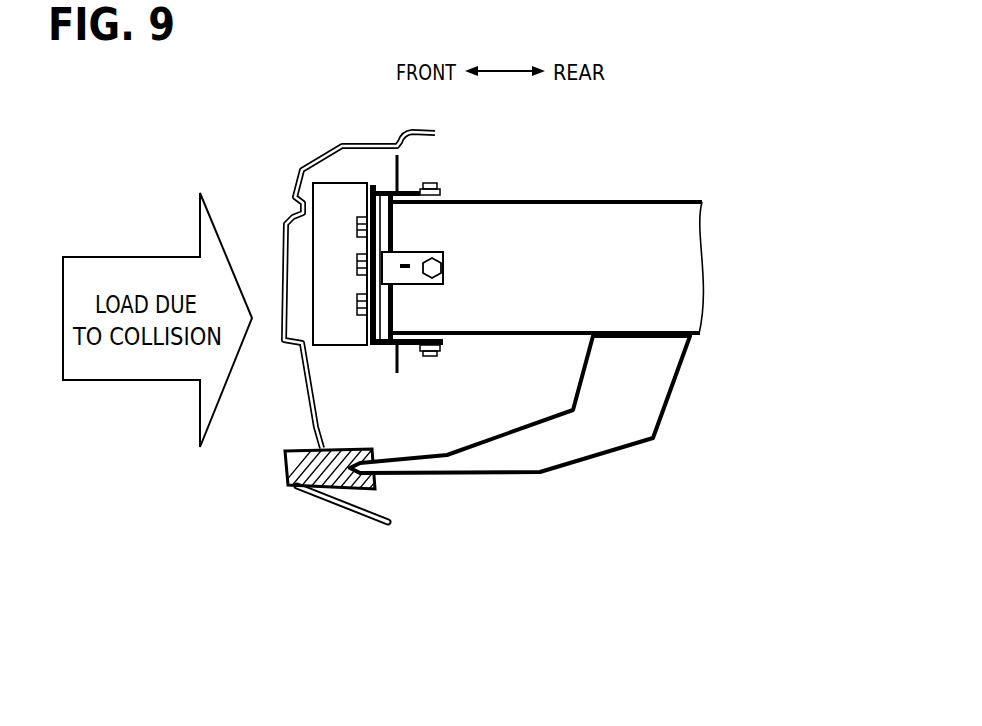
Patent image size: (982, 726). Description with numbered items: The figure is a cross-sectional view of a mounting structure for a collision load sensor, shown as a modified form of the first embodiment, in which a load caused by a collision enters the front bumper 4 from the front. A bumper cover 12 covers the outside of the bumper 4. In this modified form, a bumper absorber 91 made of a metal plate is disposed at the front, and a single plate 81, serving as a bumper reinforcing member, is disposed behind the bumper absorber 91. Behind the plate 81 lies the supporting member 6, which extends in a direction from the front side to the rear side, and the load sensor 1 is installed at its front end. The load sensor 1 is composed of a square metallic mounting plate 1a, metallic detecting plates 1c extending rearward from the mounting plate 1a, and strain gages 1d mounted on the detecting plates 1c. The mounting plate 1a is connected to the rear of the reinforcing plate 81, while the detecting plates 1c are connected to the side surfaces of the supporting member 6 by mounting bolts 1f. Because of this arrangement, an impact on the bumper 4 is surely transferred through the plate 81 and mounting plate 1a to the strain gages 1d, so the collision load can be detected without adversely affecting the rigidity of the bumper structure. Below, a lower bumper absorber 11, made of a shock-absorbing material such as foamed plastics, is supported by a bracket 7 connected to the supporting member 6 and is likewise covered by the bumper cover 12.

The load sensor 1 is at (427, 293).
The mounting plate 1a is at (375, 348).
The detecting plate 1c is at (443, 257).
The strain gage 1d is at (405, 348).
The mounting bolt 1f is at (432, 356).
The front bumper 4 is at (243, 476).
The supporting member 6 is at (624, 201).
The bracket 7 is at (597, 459).
The lower bumper absorber 11 is at (374, 486).
The bumper cover 12 is at (291, 187).
The single plate 81 is at (366, 332).
The bumper absorber 91 is at (348, 195).